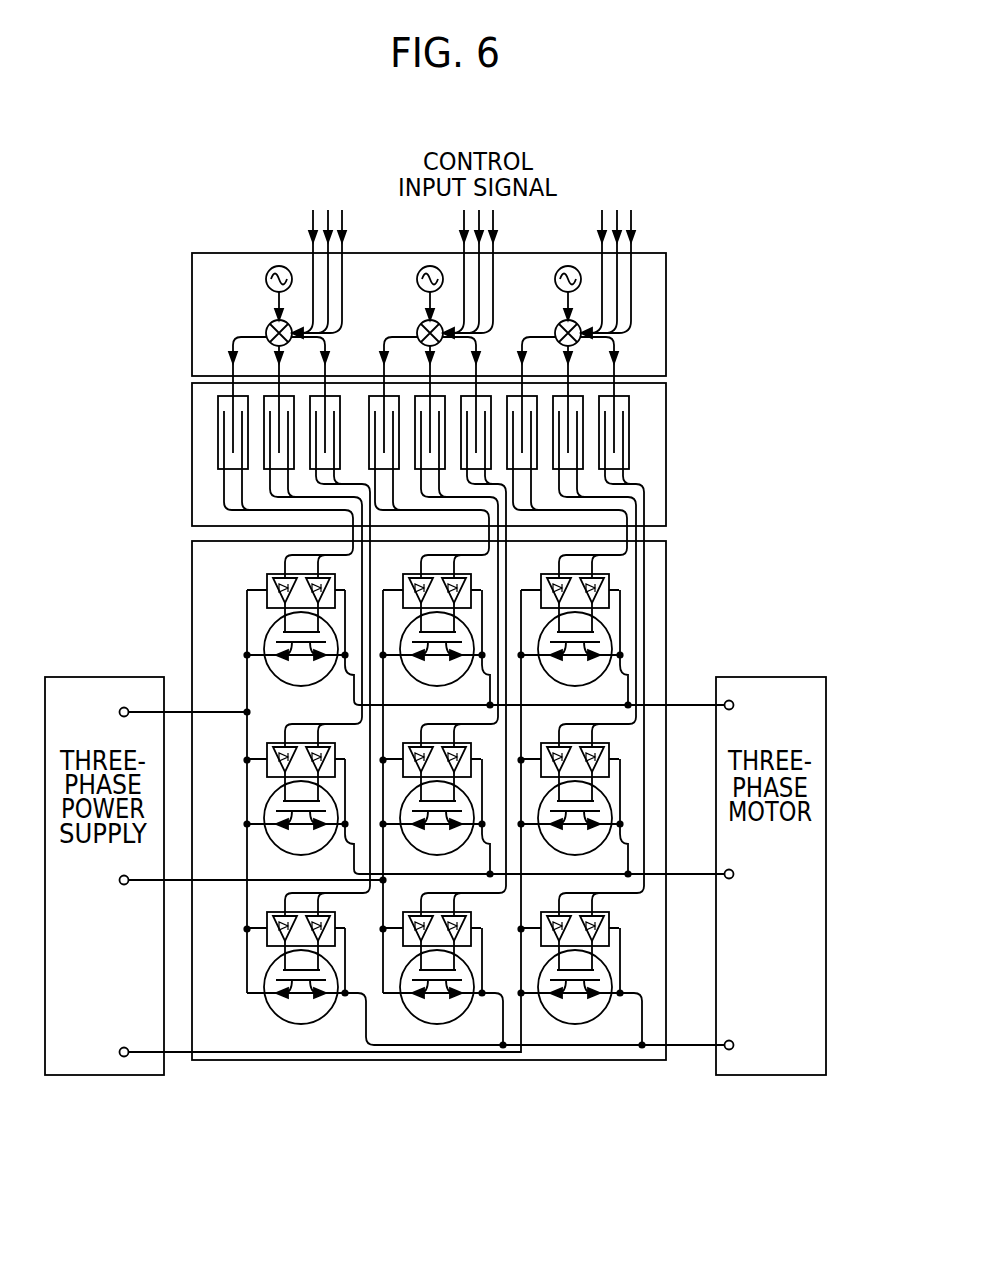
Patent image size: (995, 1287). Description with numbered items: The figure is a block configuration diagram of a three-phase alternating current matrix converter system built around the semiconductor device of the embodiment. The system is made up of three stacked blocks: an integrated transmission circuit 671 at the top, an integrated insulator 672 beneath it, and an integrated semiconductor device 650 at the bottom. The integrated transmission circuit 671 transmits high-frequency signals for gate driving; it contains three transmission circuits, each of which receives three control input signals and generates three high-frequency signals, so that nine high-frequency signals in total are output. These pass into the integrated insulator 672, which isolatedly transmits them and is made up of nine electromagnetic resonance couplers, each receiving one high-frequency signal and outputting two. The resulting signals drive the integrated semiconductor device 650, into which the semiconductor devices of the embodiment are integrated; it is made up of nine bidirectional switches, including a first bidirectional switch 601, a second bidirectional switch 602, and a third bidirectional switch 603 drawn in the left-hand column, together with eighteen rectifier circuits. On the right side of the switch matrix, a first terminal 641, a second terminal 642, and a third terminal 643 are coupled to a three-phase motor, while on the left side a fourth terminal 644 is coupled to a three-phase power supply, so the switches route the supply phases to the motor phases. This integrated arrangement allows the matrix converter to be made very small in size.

The integrated transmission circuit 671 is at (191, 309).
The integrated insulator 672 is at (191, 440).
The integrated semiconductor device 650 is at (667, 587).
The first bidirectional switch 601 is at (266, 629).
The second bidirectional switch 602 is at (266, 798).
The third bidirectional switch 603 is at (266, 967).
The first terminal 641 is at (731, 700).
The second terminal 642 is at (734, 875).
The third terminal 643 is at (729, 1050).
The fourth terminal 644 is at (124, 707).